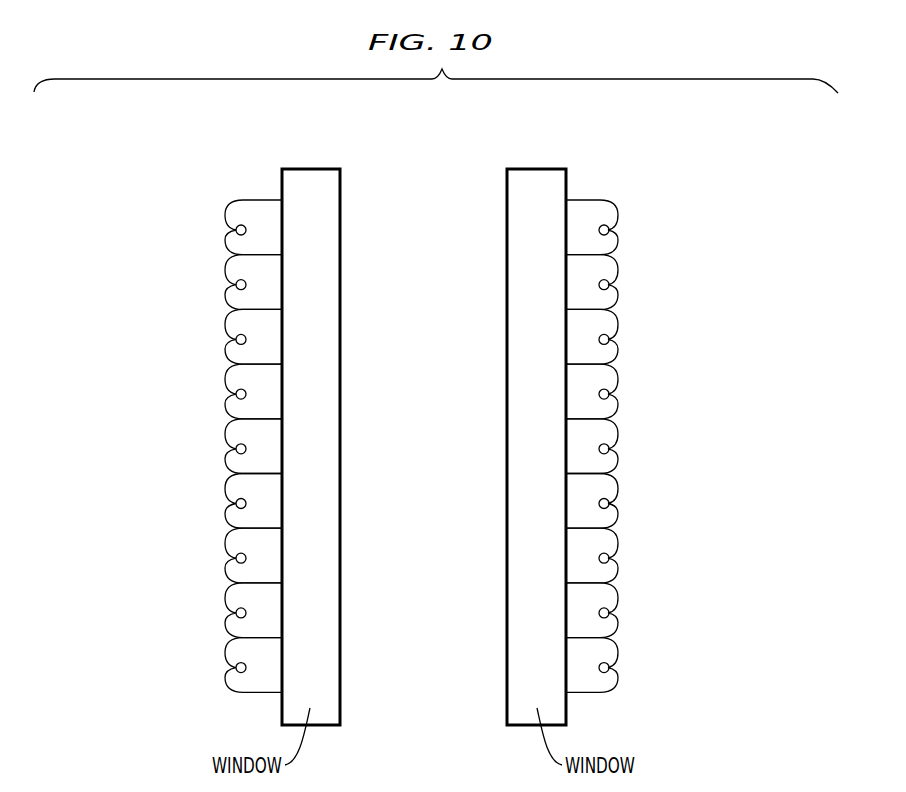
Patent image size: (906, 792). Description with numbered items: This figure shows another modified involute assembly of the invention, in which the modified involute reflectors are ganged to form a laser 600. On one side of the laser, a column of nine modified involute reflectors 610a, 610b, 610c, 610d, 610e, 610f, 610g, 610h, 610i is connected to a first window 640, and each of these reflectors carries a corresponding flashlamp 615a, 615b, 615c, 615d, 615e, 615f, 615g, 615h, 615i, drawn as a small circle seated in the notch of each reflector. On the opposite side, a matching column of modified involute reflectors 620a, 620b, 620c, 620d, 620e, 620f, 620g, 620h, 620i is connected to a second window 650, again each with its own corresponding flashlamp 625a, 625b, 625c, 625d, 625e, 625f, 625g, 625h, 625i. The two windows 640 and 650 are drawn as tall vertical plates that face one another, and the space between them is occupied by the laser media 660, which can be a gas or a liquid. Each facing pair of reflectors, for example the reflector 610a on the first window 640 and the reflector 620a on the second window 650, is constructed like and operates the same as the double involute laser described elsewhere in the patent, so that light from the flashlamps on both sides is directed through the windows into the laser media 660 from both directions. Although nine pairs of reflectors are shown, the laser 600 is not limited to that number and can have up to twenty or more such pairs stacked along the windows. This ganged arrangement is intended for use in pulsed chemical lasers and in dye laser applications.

The laser 600 is at (248, 143).
The window 640 is at (322, 180).
The window 650 is at (555, 180).
The laser media 660 is at (418, 200).
The modified involute reflector 610a is at (211, 226).
The modified involute reflector 610b is at (211, 281).
The modified involute reflector 610c is at (211, 335).
The modified involute reflector 610d is at (211, 390).
The modified involute reflector 610e is at (211, 445).
The modified involute reflector 610f is at (211, 500).
The modified involute reflector 610g is at (211, 554).
The modified involute reflector 610h is at (211, 609).
The modified involute reflector 610i is at (211, 664).
The flashlamp 615a is at (157, 236).
The flashlamp 615b is at (157, 291).
The flashlamp 615c is at (157, 345).
The flashlamp 615d is at (157, 400).
The flashlamp 615e is at (157, 455).
The flashlamp 615f is at (157, 510).
The flashlamp 615g is at (157, 564).
The flashlamp 615h is at (157, 619).
The flashlamp 615i is at (157, 674).
The modified involute reflector 620a is at (642, 227).
The modified involute reflector 620b is at (642, 282).
The modified involute reflector 620c is at (642, 336).
The modified involute reflector 620d is at (642, 391).
The modified involute reflector 620e is at (642, 446).
The modified involute reflector 620f is at (642, 501).
The modified involute reflector 620g is at (642, 555).
The modified involute reflector 620h is at (642, 610).
The modified involute reflector 620i is at (642, 665).
The flashlamp 625a is at (609, 230).
The flashlamp 625b is at (609, 285).
The flashlamp 625c is at (609, 339).
The flashlamp 625d is at (609, 394).
The flashlamp 625e is at (609, 449).
The flashlamp 625f is at (609, 504).
The flashlamp 625g is at (609, 558).
The flashlamp 625h is at (609, 613).
The flashlamp 625i is at (609, 668).